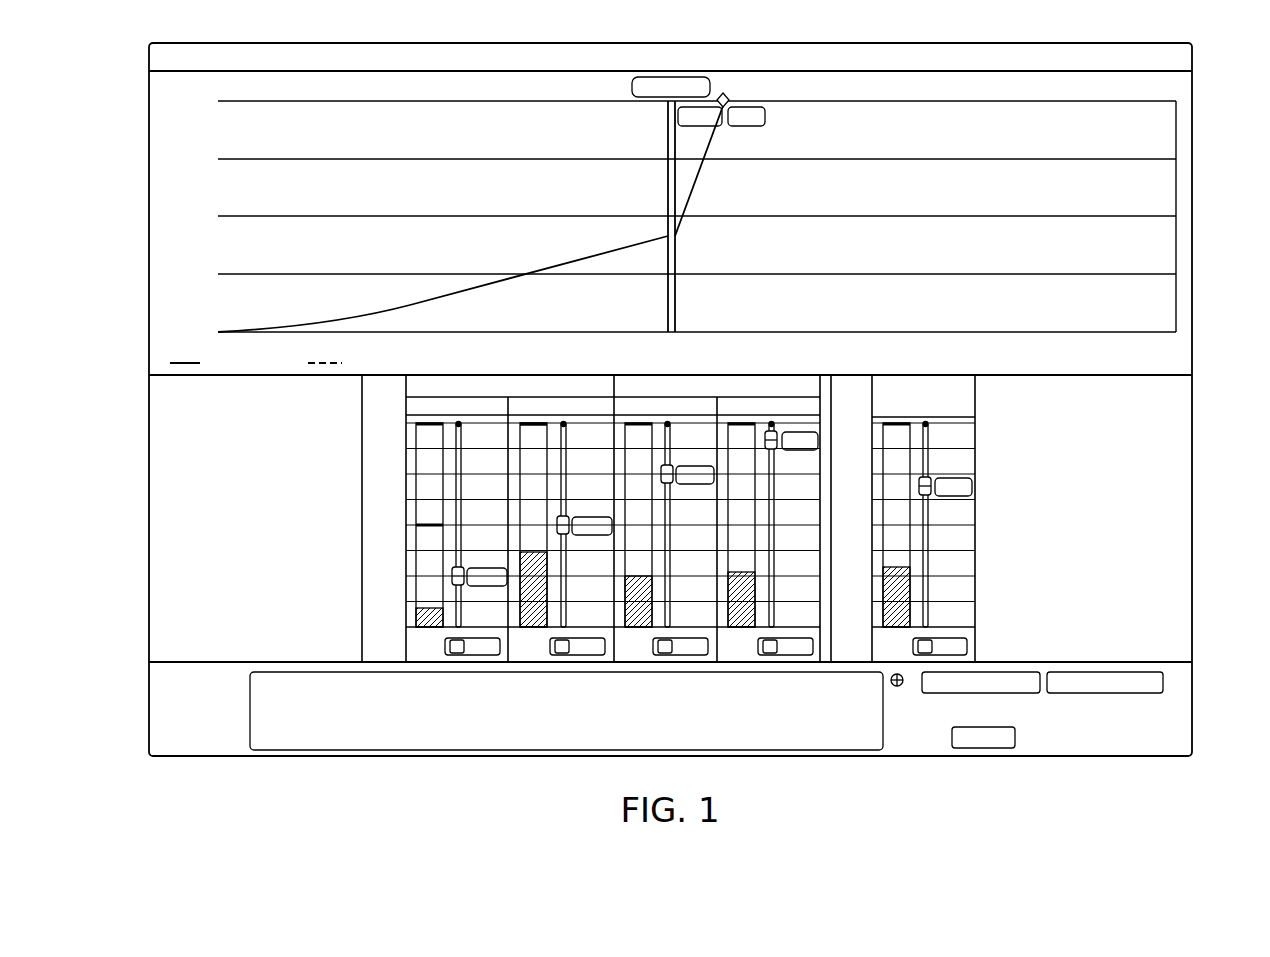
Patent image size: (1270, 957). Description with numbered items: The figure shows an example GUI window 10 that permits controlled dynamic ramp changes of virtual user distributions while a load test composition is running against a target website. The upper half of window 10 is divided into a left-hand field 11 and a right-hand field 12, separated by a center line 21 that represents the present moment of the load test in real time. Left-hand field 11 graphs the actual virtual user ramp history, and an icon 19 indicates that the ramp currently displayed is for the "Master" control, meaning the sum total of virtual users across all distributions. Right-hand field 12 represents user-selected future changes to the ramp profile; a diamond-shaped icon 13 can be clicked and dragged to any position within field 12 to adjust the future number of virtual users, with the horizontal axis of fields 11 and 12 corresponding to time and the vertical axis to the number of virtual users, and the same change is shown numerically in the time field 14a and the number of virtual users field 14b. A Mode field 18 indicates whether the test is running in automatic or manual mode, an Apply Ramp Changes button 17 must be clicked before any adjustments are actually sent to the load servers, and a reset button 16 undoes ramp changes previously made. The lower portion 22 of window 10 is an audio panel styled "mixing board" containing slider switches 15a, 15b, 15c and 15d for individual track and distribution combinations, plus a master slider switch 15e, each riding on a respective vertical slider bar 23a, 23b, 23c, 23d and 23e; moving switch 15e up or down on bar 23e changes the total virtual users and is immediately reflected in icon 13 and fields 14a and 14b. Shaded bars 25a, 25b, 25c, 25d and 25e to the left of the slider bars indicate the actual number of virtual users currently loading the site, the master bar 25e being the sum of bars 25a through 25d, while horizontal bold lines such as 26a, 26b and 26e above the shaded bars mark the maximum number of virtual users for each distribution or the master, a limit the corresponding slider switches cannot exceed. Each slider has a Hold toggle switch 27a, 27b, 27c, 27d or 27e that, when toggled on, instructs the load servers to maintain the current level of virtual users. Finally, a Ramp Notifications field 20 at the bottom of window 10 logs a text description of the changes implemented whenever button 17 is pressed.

The GUI window 10 is at (884, 40).
The left-hand field 11 is at (195, 135).
The right-hand field 12 is at (1160, 185).
The diamond-shaped icon 13 is at (726, 93).
The time field 14a is at (692, 127).
The number of virtual users field 14b is at (742, 126).
The slider switch 15a is at (460, 586).
The slider switch 15b is at (565, 535).
The slider switch 15c is at (670, 484).
The slider switch 15d is at (773, 450).
The master slider switch 15e is at (930, 497).
The reset button 16 is at (1015, 672).
The Apply Ramp Changes button 17 is at (1110, 672).
The Mode field 18 is at (1017, 738).
The icon 19 is at (632, 87).
The Ramp Notifications field 20 is at (294, 728).
The center line 21 is at (677, 300).
The lower portion 22 is at (1160, 485).
The vertical slider bar 23a is at (455, 440).
The vertical slider bar 23b is at (567, 437).
The vertical slider bar 23c is at (672, 437).
The vertical slider bar 23d is at (771, 525).
The vertical slider bar 23e is at (930, 560).
The shaded bar 25a is at (397, 629).
The shaded bar 25b is at (520, 629).
The shaded bar 25c is at (627, 629).
The shaded bar 25d is at (757, 629).
The shaded bar 25e is at (912, 613).
The horizontal bold line 26a is at (428, 522).
The horizontal bold line 26b is at (535, 422).
The horizontal bold line 26e is at (890, 420).
The Hold toggle switch 27a is at (465, 656).
The Hold toggle switch 27b is at (568, 656).
The Hold toggle switch 27c is at (667, 656).
The Hold toggle switch 27d is at (810, 656).
The Hold toggle switch 27e is at (920, 656).